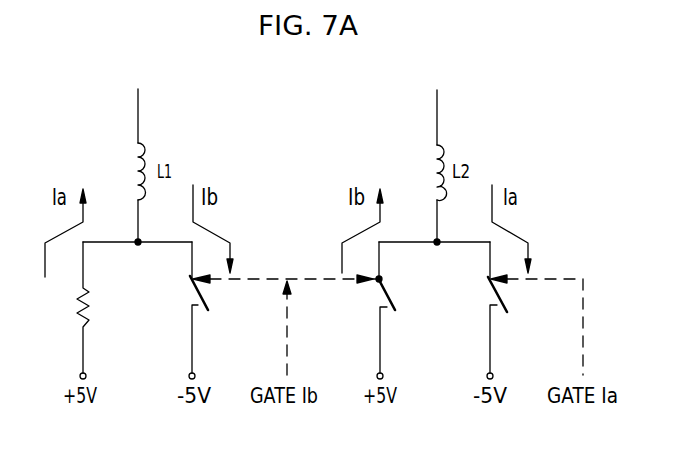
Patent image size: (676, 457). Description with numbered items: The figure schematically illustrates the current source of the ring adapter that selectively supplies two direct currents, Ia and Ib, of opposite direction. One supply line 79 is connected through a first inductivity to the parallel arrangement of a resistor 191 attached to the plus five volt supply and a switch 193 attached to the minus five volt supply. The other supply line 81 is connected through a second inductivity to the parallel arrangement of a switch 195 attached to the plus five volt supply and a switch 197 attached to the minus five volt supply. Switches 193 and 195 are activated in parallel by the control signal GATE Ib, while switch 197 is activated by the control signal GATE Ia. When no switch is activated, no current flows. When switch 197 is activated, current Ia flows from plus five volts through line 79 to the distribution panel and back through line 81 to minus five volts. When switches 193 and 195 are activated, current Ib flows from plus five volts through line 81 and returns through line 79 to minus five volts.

The supply line 79 is at (138, 110).
The supply line 81 is at (437, 115).
The resistor 191 is at (75, 300).
The switch 193 is at (195, 288).
The switch 195 is at (393, 300).
The switch 197 is at (503, 298).